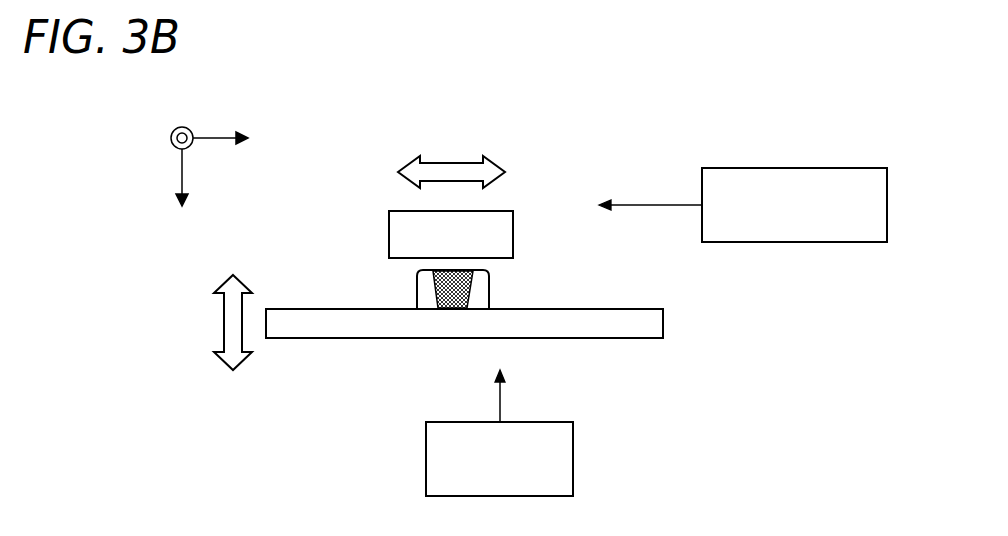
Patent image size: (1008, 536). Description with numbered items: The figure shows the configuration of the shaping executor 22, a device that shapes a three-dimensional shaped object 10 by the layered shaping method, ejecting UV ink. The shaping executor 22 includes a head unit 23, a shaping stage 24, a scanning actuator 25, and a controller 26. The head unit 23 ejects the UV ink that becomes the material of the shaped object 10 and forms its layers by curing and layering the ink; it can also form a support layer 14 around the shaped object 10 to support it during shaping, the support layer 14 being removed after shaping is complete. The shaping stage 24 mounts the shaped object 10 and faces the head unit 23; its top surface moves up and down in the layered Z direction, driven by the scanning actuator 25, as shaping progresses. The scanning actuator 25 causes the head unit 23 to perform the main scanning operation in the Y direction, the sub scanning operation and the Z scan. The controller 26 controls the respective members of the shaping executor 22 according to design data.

The shaped object 10 is at (473, 285).
The support layer 14 is at (417, 300).
The shaping executor 22 is at (892, 95).
The head unit 23 is at (389, 243).
The shaping stage 24 is at (342, 327).
The scanning actuator 25 is at (800, 168).
The controller 26 is at (573, 458).